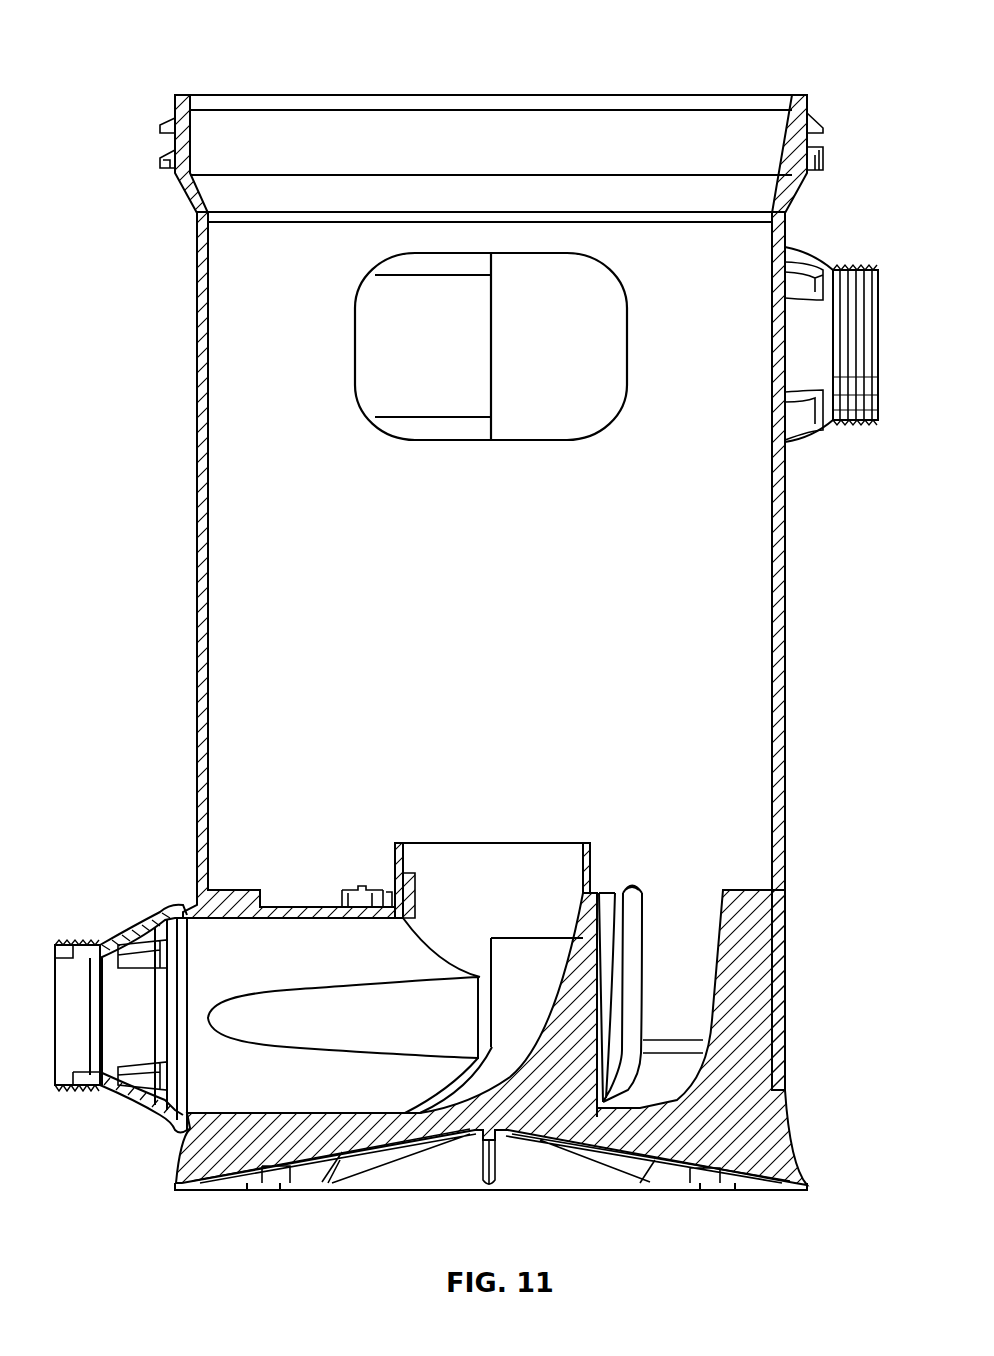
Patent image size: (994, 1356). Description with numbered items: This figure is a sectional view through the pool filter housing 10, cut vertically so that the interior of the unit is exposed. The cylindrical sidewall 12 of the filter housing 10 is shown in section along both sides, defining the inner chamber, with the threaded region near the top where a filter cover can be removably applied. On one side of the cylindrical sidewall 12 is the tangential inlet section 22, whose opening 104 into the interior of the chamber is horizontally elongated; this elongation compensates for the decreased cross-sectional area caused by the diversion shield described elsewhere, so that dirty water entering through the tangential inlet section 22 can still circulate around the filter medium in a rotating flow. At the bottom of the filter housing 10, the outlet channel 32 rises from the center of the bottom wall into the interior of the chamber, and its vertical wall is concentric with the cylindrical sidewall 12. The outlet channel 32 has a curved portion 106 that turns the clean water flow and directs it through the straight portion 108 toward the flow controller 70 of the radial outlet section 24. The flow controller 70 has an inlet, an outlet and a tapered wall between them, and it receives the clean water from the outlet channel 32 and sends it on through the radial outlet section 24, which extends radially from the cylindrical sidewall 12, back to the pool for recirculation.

The pool filter housing 10 is at (792, 40).
The cylindrical sidewall 12 is at (786, 645).
The tangential inlet section 22 is at (835, 257).
The radial outlet section 24 is at (146, 914).
The outlet channel 32 is at (489, 870).
The flow controller 70 is at (128, 1110).
The opening 104 is at (355, 348).
The curved portion 106 is at (548, 1040).
The straight portion 108 is at (285, 906).